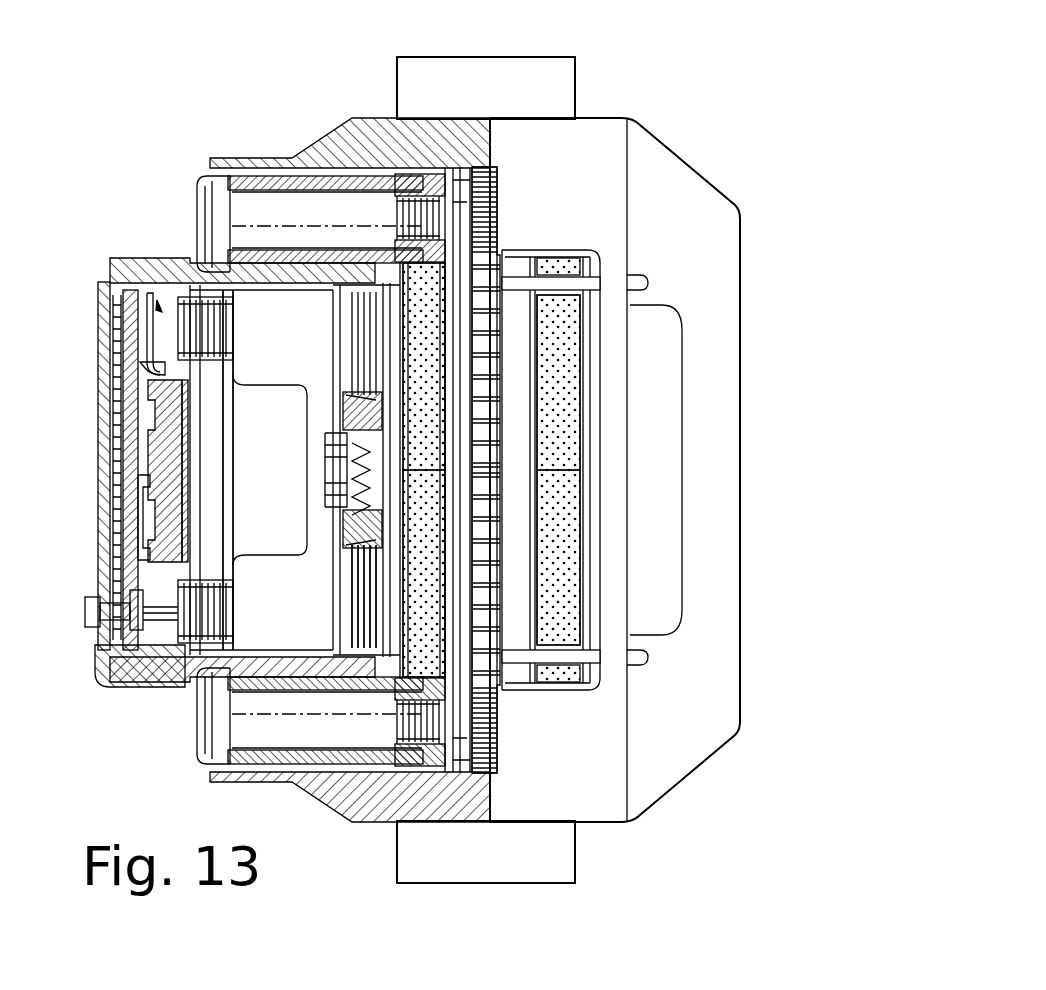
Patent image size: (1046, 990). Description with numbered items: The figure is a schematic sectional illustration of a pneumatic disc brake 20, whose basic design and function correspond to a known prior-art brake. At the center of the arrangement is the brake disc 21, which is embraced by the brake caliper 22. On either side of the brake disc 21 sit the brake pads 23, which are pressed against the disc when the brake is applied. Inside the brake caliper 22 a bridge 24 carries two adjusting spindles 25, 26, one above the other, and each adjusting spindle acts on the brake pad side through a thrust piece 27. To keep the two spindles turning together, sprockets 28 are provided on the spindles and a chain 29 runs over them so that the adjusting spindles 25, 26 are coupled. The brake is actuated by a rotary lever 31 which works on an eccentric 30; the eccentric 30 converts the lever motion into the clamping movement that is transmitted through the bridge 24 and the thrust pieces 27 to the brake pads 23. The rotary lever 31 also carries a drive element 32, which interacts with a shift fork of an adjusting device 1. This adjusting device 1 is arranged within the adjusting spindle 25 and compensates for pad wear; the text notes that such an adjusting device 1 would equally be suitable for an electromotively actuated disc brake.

The adjusting device 1 is at (159, 300).
The disc brake 20 is at (703, 58).
The brake disc 21 is at (460, 715).
The brake caliper 22 is at (330, 793).
The brake pads 23 is at (565, 265).
The bridge 24 is at (262, 300).
The adjusting spindle 25 is at (195, 300).
The adjusting spindle 26 is at (197, 650).
The thrust pieces 27 is at (377, 305).
The sprockets 28 is at (103, 660).
The chain 29 is at (118, 366).
The eccentric 30 is at (210, 535).
The rotary lever 31 is at (143, 492).
The drive element 32 is at (135, 385).